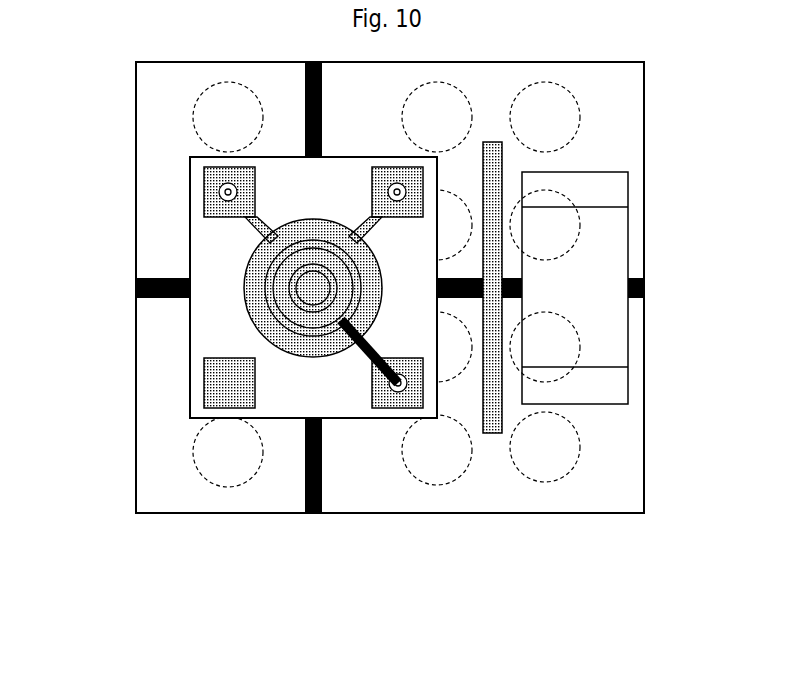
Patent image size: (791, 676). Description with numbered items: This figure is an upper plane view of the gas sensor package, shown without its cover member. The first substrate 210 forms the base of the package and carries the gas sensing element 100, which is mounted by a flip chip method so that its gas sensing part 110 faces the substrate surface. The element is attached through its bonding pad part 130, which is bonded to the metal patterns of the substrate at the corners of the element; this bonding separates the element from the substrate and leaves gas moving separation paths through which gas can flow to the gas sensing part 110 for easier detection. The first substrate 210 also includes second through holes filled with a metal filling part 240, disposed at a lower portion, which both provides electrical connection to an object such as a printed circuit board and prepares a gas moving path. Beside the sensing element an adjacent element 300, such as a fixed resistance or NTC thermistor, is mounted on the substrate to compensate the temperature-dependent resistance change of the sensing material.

The gas sensing element 100 is at (180, 325).
The gas sensing part 110 is at (318, 342).
The bonding pad part 130 is at (203, 192).
The first substrate 210 is at (183, 497).
The metal filling part 240 is at (442, 472).
The adjacent element 300 is at (610, 243).